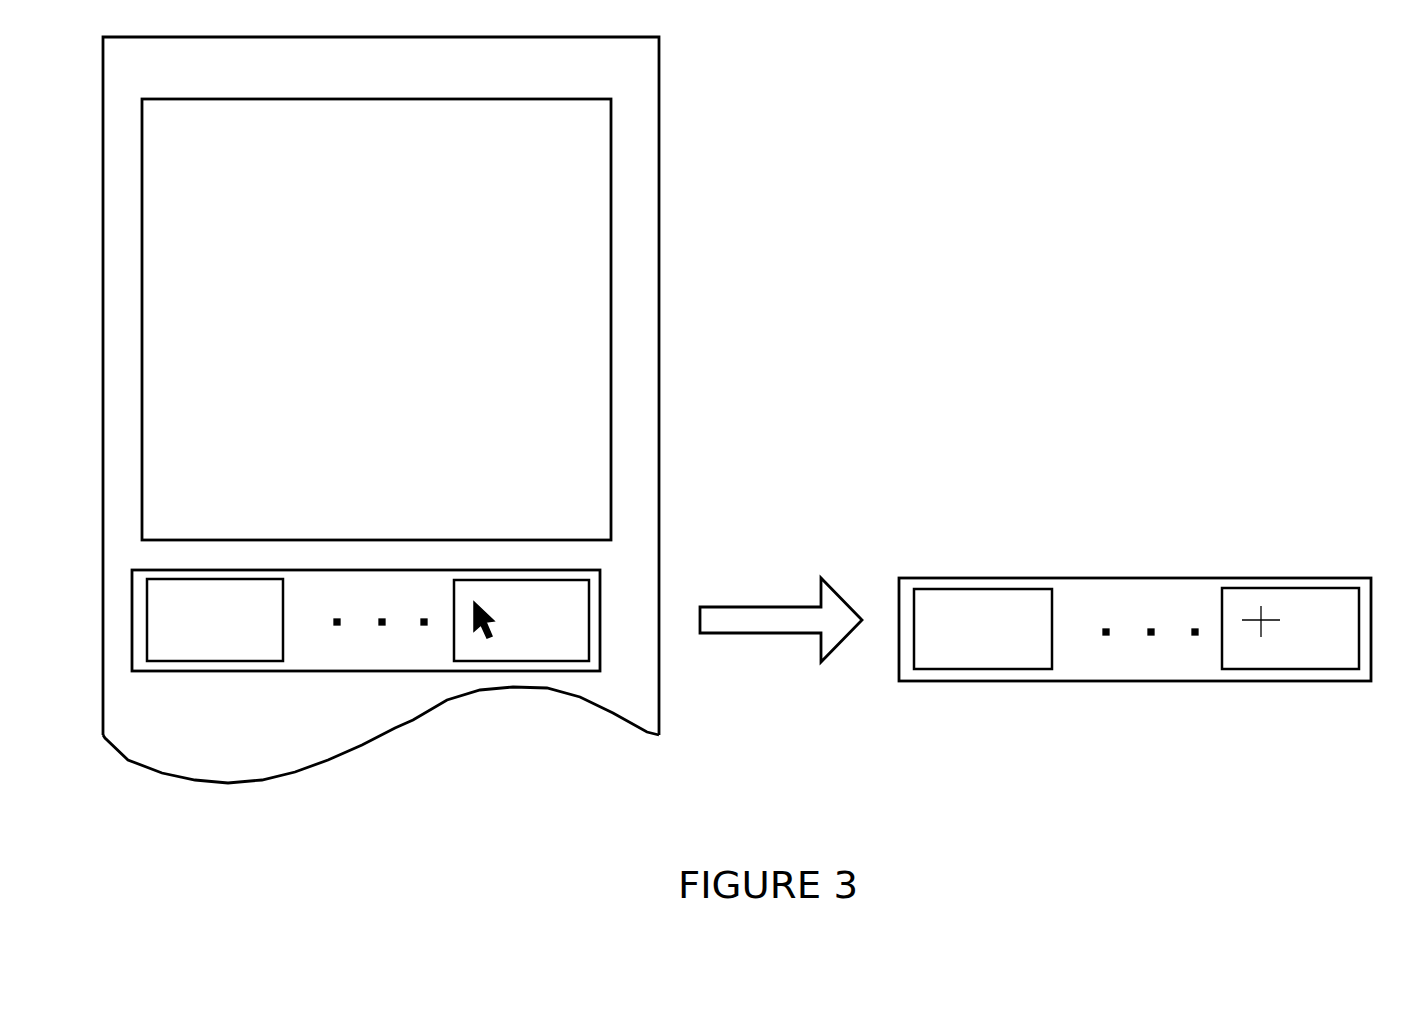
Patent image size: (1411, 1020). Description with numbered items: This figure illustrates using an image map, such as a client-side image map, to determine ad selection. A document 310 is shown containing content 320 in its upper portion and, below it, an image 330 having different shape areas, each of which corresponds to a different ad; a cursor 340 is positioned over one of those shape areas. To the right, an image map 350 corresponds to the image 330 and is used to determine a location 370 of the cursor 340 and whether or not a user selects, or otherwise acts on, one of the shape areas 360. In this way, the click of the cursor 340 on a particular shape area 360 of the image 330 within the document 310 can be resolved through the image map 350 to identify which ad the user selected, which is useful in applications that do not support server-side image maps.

The document 310 is at (395, 728).
The content 320 is at (309, 98).
The image 330 is at (362, 671).
The cursor 340 is at (472, 600).
The image map 350 is at (1137, 682).
The shape area 360 is at (980, 670).
The location 370 is at (1262, 602).